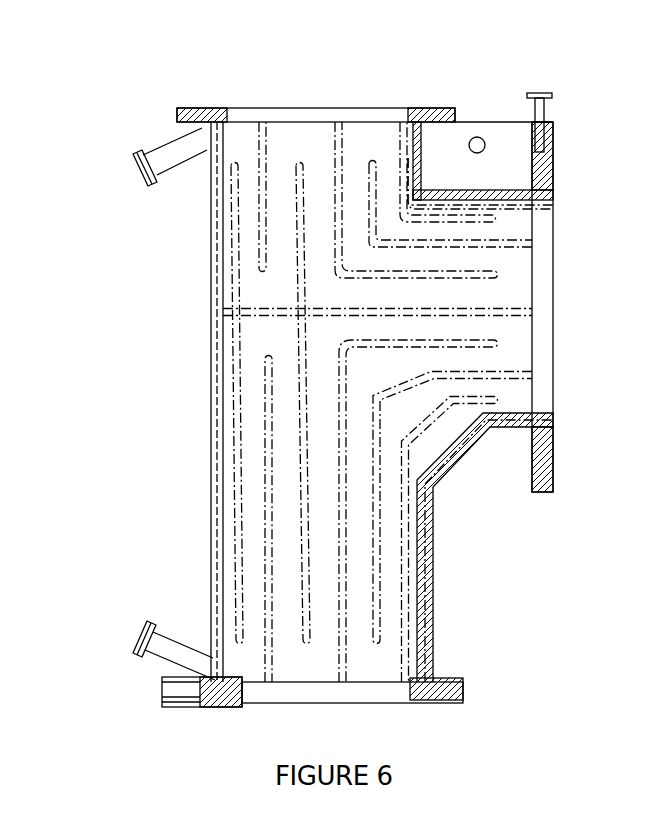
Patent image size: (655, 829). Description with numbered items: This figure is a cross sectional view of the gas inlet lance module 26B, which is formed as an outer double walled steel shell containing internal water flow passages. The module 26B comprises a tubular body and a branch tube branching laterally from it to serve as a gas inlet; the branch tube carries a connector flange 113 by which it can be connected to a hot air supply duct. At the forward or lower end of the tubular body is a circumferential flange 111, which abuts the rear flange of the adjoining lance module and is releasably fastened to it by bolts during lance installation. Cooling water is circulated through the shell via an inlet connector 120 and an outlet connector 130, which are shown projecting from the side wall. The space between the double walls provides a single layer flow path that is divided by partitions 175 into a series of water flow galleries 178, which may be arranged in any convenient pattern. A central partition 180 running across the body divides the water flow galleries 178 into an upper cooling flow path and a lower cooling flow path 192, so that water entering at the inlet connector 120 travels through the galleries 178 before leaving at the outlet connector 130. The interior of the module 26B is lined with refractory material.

The gas inlet lance module 26B is at (147, 108).
The water flow galleries 178 is at (244, 165).
The partitions 175 is at (265, 162).
The connector flange 113 is at (553, 143).
The inlet connector 120 is at (167, 173).
The central partition 180 is at (263, 313).
The lower cooling flow path 192 is at (253, 493).
The outlet connector 130 is at (181, 643).
The circumferential flange 111 is at (463, 692).